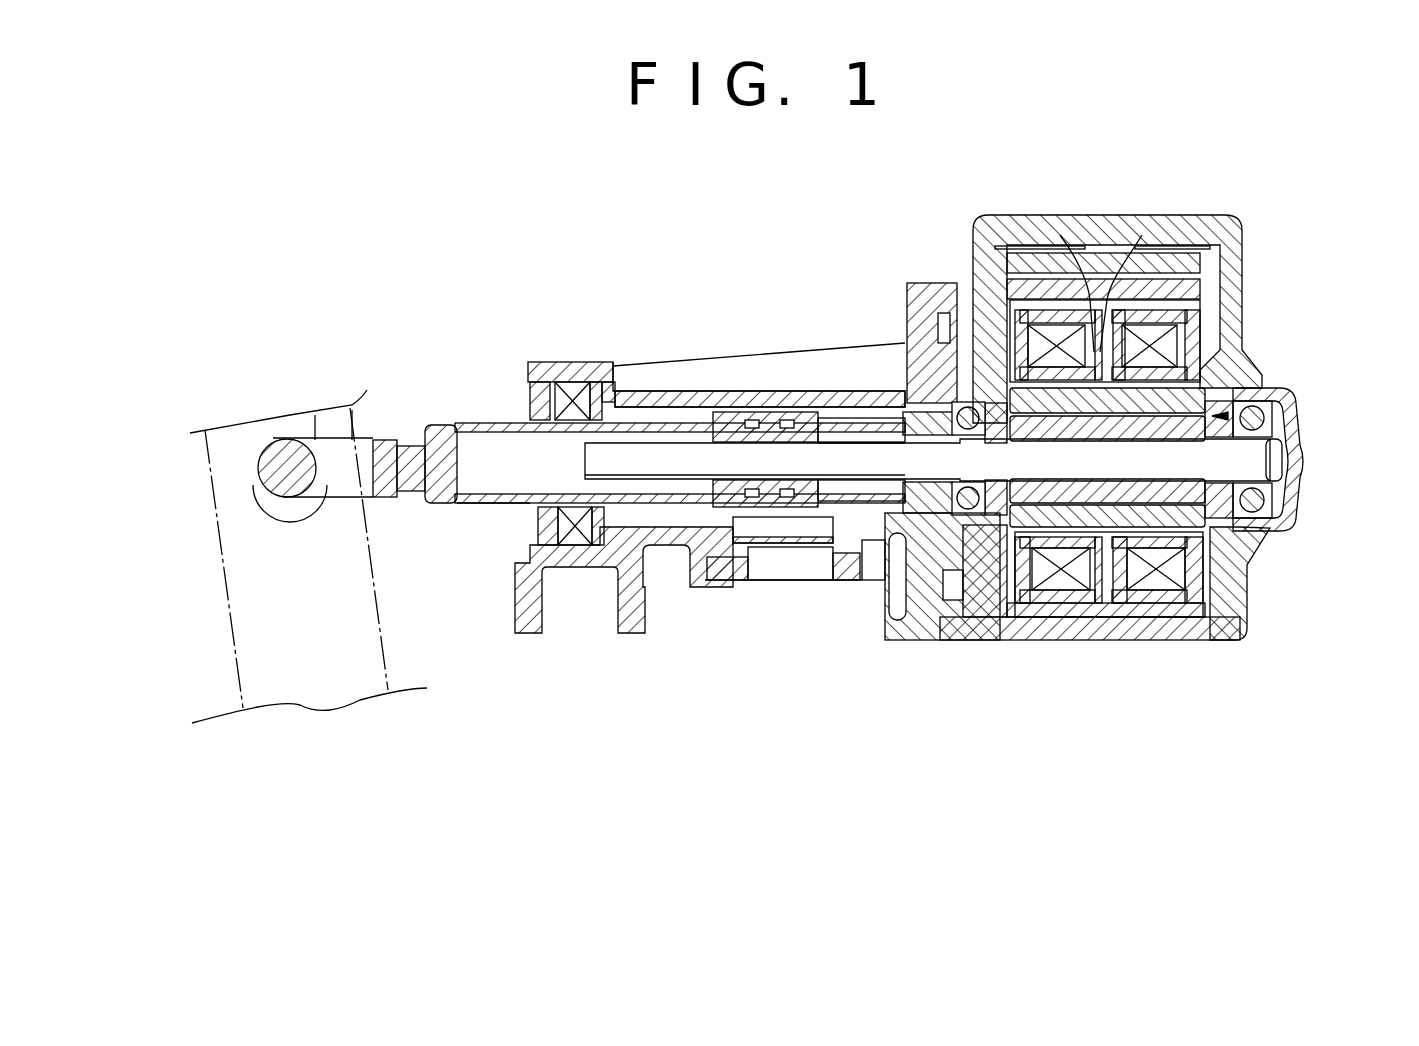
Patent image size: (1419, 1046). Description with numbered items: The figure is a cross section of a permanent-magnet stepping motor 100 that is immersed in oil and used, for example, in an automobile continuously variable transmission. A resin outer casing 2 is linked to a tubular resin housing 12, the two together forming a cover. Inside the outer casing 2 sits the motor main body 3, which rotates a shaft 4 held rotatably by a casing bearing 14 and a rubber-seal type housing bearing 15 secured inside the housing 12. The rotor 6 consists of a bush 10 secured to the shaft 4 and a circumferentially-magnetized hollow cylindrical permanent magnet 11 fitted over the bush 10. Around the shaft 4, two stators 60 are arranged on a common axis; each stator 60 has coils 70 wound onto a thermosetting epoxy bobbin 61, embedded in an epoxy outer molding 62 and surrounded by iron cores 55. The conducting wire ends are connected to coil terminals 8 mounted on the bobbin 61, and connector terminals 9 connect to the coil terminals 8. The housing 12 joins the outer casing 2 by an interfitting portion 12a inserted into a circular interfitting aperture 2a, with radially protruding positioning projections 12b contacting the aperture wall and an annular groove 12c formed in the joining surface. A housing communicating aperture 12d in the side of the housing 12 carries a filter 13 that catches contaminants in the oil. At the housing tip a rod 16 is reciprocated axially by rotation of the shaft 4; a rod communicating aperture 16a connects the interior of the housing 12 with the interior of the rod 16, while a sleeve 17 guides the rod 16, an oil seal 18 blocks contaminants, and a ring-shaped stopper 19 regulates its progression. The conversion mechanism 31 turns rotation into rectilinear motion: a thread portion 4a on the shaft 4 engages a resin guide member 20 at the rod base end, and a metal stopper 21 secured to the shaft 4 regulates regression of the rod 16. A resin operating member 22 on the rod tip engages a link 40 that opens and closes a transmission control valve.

The stepping motor 100 is at (1320, 177).
The outer casing 2 is at (1215, 244).
The interfitting aperture 2a is at (907, 385).
The motor main body 3 is at (1195, 290).
The shaft 4 is at (1243, 465).
The thread portion 4a is at (847, 440).
The rotor 6 is at (1292, 430).
The coil terminals 8 is at (1085, 235).
The connector terminals 9 is at (1158, 235).
The bush 10 is at (1247, 550).
The permanent magnet 11 is at (1270, 597).
The housing 12 is at (560, 358).
The interfitting portion 12a is at (925, 345).
The positioning projections 12b is at (927, 640).
The annular groove 12c is at (935, 340).
The housing communicating aperture 12d is at (797, 567).
The filter 13 is at (770, 556).
The casing bearing 14 is at (1285, 388).
The housing bearing 15 is at (968, 540).
The rod 16 is at (478, 423).
The rod communicating aperture 16a is at (698, 423).
The sleeve 17 is at (530, 505).
The oil seal 18 is at (575, 540).
The stopper 19 is at (600, 547).
The guide member 20 is at (799, 413).
The stopper 21 is at (860, 500).
The operating member 22 is at (390, 440).
The conversion mechanism 31 is at (722, 420).
The link 40 is at (333, 420).
The cores 55 is at (1102, 585).
The stator 60 is at (1157, 592).
The bobbin 61 is at (1197, 597).
The outer molding 62 is at (1140, 570).
The coils 70 is at (1212, 346).